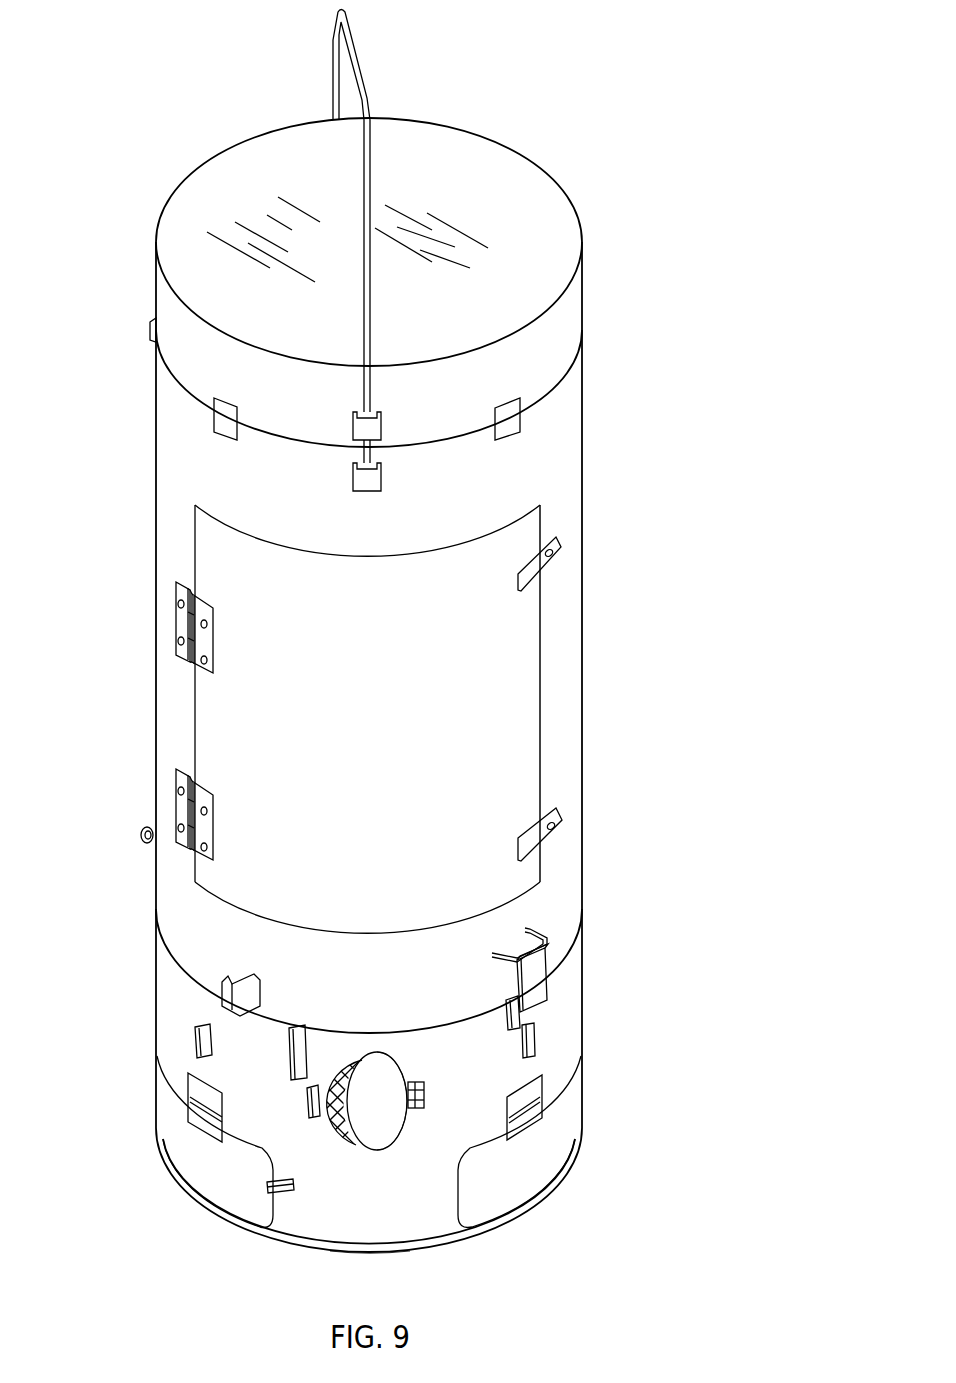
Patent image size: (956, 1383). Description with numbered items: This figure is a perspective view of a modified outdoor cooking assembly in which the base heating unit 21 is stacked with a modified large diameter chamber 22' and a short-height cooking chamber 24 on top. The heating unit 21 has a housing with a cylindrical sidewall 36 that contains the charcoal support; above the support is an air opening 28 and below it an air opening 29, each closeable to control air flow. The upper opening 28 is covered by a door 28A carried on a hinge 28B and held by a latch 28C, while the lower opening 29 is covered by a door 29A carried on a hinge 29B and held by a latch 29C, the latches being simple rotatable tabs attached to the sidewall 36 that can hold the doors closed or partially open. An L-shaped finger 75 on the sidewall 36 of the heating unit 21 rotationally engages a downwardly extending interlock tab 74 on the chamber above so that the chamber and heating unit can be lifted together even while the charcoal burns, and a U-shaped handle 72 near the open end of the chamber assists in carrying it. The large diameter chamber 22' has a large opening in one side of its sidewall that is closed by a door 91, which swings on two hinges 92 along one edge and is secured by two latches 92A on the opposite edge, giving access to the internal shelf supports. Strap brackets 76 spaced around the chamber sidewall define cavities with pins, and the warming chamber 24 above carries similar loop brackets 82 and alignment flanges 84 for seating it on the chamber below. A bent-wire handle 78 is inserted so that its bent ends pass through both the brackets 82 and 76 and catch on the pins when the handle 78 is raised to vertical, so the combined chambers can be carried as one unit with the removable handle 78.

The base heating unit 21 is at (596, 1024).
The short-height cooking chamber 24 is at (585, 186).
The bent-wire handle 78 is at (355, 44).
The loop bracket 82 is at (378, 430).
The strap bracket 76 is at (368, 493).
The alignment flange 84 is at (226, 420).
The door 91 is at (541, 707).
The hinge 92 is at (180, 621).
The latch 92A is at (548, 568).
The large diameter chamber 22' is at (615, 693).
The U-shaped handle 72 is at (140, 832).
The interlock tab 74 is at (538, 980).
The L-shaped finger 75 is at (507, 1010).
The latch 29C is at (193, 1043).
The hinge 29B is at (188, 1120).
The door 29A is at (195, 1165).
The latch 28C is at (307, 1090).
The hinge 28B is at (423, 1086).
The air opening 28 is at (332, 1128).
The door 28A is at (390, 1130).
The cylindrical sidewall 36 is at (405, 1222).
The air opening 29 is at (313, 1033).